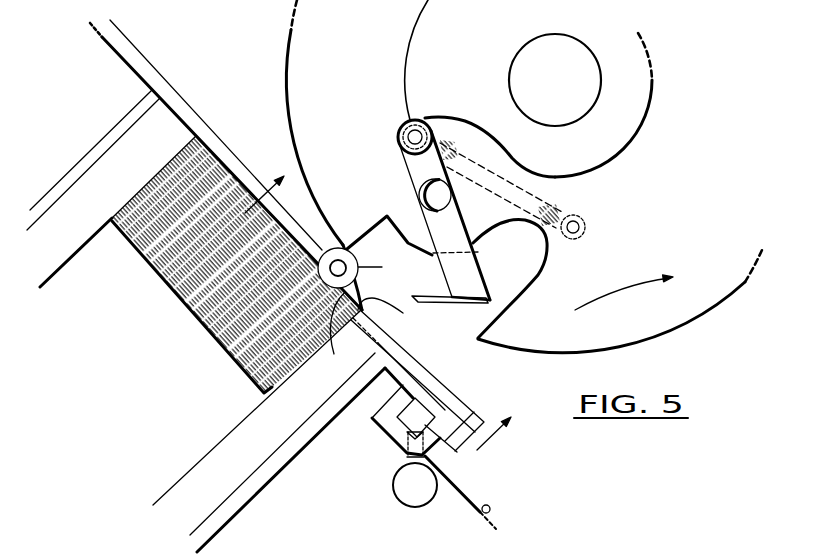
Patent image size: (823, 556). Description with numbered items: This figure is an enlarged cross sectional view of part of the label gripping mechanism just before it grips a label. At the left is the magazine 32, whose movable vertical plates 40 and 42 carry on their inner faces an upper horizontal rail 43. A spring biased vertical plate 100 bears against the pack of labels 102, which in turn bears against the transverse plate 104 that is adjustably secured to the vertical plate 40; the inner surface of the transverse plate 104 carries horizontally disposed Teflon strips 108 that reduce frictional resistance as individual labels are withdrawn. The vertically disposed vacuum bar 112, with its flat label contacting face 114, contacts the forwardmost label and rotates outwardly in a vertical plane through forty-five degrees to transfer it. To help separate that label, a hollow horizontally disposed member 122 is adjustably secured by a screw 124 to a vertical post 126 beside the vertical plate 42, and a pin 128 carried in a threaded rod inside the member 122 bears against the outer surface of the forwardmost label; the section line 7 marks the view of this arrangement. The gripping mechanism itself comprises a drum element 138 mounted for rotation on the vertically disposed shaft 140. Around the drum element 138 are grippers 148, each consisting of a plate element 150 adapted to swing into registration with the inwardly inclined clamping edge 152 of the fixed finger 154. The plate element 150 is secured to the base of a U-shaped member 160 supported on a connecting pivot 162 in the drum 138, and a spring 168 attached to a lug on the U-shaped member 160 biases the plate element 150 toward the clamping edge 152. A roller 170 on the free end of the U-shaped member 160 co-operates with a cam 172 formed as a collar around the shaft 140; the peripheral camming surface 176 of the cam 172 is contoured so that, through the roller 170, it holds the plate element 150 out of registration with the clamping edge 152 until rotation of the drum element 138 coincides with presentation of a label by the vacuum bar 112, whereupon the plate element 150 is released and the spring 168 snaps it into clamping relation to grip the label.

The section line 7- 7 is at (378, 306).
The magazine 32 is at (77, 140).
The vertical plate 40 is at (110, 133).
The vertical plate 42 is at (263, 478).
The upper horizontal rail 43 is at (63, 240).
The spring biased vertical plate 100 is at (220, 343).
The pack of labels 102 is at (218, 290).
The transverse plate 104 is at (173, 97).
The Teflon strips 108 is at (222, 164).
The vacuum bar 112 is at (325, 240).
The flat label contacting face 114 is at (333, 332).
The horizontally disposed member 122 is at (460, 390).
The screw 124 is at (412, 487).
The vertical post 126 is at (387, 428).
The pin 128 is at (403, 313).
The drum element 138 is at (294, 56).
The shaft 140 is at (528, 62).
The gripper 148 is at (467, 210).
The plate element 150 is at (443, 303).
The inwardly inclined clamping edge 152 is at (372, 272).
The fixed finger 154 is at (379, 232).
The U-shaped member 160 is at (470, 268).
The connecting pivot 162 is at (424, 190).
The spring 168 is at (563, 204).
The roller 170 is at (398, 134).
The cam 172 is at (428, 63).
The peripheral camming surface 176 is at (405, 92).